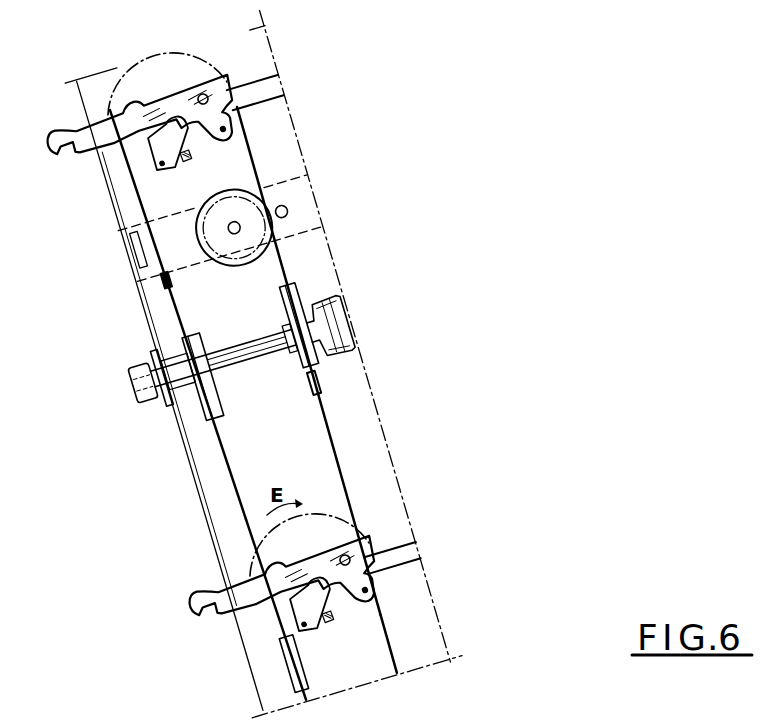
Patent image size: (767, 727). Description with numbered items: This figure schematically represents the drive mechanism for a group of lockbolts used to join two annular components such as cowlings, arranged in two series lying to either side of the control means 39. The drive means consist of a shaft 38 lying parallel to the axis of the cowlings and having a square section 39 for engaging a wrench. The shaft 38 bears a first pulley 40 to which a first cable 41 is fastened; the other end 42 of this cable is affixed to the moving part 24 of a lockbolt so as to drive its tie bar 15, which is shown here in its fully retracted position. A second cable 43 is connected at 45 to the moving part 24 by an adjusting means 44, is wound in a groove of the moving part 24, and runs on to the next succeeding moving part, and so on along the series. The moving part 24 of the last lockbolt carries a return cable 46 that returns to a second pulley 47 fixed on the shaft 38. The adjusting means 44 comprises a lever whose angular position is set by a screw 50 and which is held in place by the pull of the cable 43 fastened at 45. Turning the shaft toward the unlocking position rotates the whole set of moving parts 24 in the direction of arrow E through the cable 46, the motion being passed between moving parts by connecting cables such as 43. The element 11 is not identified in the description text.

The guide rail 11 is at (350, 414).
The tie bar 15 is at (200, 610).
The moving part 24 is at (290, 536).
The shaft 38 is at (256, 360).
The square section 39 is at (128, 386).
The first pulley 40 is at (318, 374).
The first cable 41 is at (341, 473).
The other end of first cable 42 is at (366, 588).
The second cable 43 is at (393, 650).
The adjusting means 44 is at (318, 638).
The connection point 45 is at (270, 631).
The return cable 46 is at (223, 458).
The second pulley 47 is at (178, 411).
The screw 50 is at (331, 607).